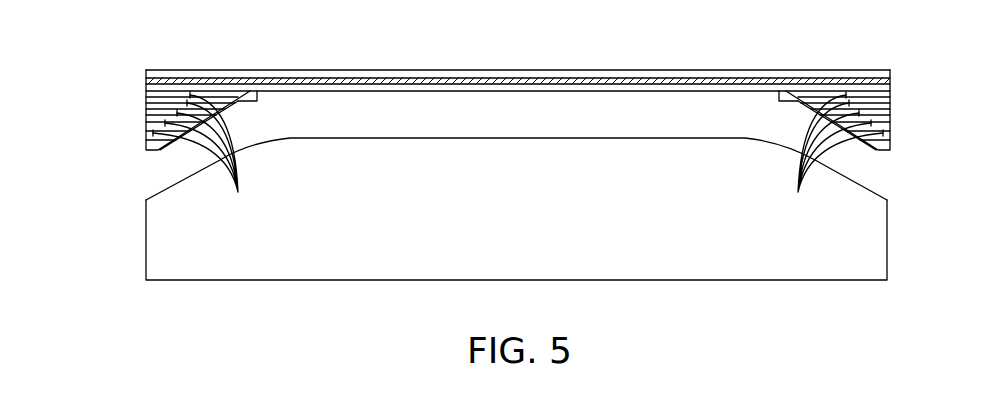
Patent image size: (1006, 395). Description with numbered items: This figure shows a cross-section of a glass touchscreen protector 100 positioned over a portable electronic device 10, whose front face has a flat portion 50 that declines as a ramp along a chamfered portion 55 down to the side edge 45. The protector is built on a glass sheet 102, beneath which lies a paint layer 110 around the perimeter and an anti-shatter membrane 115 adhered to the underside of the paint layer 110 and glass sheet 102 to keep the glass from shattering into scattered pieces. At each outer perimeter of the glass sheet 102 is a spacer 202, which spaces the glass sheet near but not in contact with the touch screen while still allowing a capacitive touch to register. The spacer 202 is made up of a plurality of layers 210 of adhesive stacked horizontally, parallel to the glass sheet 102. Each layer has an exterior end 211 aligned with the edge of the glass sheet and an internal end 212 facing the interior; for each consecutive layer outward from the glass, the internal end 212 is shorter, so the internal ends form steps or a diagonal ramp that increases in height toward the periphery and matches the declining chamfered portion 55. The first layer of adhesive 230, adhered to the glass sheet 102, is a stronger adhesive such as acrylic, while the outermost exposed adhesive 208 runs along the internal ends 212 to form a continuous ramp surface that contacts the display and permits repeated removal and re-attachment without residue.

The glass touchscreen protector 100 is at (104, 32).
The glass sheet 102 is at (890, 72).
The paint layer 110 is at (890, 80).
The anti-shatter membrane 115 is at (890, 88).
The spacer 202 is at (126, 144).
The exterior end 211 is at (136, 112).
The internal end 212 is at (253, 110).
The exposed adhesive 208 is at (215, 135).
The plurality of layers of adhesive 210 is at (518, 155).
The first layer of adhesive 230 is at (170, 95).
The portable electronic device 10 is at (134, 255).
The flat portion 50 is at (538, 128).
The chamfered portion 55 is at (869, 176).
The side edge 45 is at (887, 243).